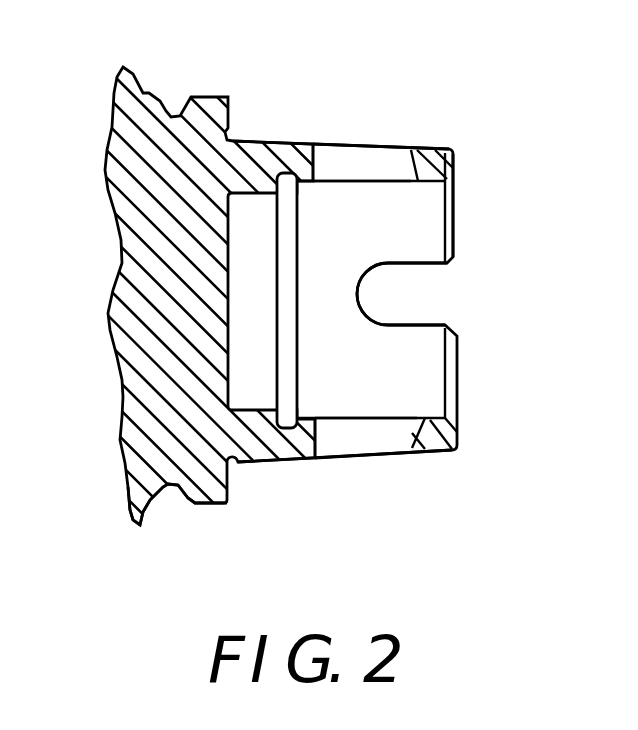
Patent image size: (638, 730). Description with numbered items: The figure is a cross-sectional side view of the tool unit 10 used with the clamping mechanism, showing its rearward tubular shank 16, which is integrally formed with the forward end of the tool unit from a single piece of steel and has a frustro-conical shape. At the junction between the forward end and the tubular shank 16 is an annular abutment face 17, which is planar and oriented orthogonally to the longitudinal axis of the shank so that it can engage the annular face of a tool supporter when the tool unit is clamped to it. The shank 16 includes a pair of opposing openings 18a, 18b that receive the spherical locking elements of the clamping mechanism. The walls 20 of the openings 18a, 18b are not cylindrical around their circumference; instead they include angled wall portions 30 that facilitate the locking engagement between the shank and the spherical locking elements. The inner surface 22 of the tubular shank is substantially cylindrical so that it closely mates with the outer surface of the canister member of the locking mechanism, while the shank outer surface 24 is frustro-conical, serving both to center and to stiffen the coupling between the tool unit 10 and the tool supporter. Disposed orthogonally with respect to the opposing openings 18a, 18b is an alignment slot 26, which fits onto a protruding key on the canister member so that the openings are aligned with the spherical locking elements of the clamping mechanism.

The tool unit 10 is at (495, 150).
The tubular shank 16 is at (447, 149).
The annular abutment face 17 is at (233, 488).
The opening 18a is at (385, 457).
The opening 18b is at (382, 148).
The walls of the openings 20 is at (343, 163).
The inner surface 22 is at (348, 313).
The shank outer surface 24 is at (260, 137).
The alignment slot 26 is at (424, 326).
The angled wall portions 30 is at (405, 172).